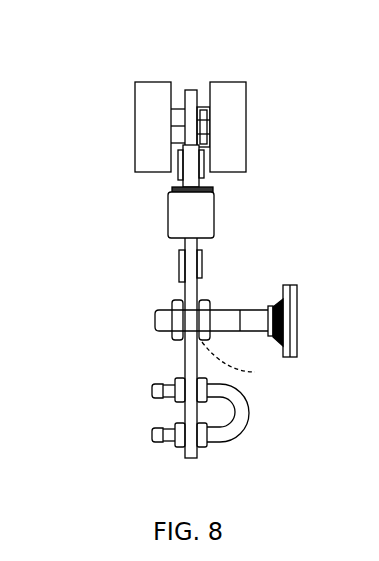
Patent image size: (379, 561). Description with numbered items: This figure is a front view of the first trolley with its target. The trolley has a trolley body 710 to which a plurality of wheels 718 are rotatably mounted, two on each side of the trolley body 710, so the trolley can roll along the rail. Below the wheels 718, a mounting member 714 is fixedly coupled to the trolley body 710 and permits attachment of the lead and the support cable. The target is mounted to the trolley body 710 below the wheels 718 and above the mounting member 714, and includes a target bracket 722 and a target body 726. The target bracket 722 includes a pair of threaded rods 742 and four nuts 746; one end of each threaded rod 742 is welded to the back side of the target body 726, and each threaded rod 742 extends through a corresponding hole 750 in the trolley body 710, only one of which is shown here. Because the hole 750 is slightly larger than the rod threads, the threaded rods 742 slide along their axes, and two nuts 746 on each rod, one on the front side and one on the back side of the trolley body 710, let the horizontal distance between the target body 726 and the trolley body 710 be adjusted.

The trolley body 710 is at (189, 270).
The mounting member 714 is at (244, 412).
The wheels 718 is at (152, 88).
The target bracket 722 is at (198, 305).
The target body 726 is at (292, 284).
The threaded rods 742 is at (229, 310).
The nuts 746 is at (204, 300).
The hole 750 is at (247, 362).